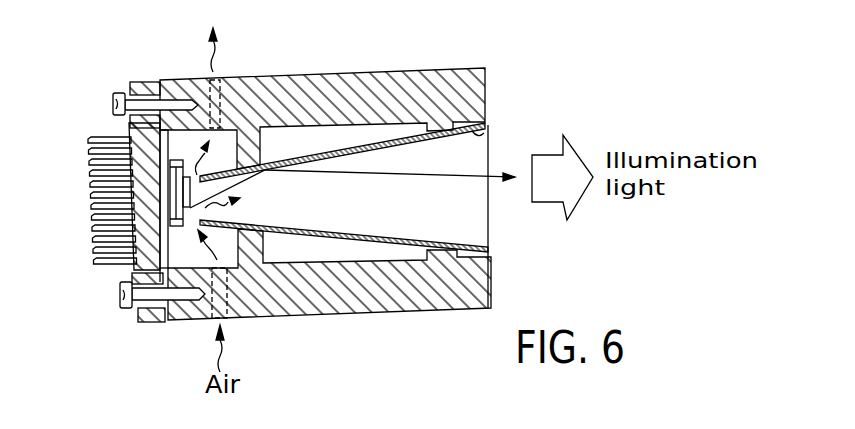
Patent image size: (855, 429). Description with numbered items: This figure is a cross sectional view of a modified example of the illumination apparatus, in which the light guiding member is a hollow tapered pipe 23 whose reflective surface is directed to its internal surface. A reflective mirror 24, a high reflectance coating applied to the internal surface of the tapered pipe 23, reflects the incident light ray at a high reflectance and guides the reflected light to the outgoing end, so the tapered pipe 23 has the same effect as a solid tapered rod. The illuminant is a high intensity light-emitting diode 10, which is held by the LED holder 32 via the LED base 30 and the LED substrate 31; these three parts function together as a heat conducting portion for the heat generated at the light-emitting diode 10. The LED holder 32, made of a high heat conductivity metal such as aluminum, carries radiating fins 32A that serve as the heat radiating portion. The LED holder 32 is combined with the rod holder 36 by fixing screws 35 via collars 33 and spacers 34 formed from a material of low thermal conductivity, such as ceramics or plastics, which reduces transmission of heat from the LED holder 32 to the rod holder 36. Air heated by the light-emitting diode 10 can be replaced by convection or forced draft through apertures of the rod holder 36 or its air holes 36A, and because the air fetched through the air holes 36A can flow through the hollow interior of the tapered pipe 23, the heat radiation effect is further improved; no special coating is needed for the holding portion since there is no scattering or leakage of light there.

The light-emitting diode (LED chip) 10 is at (337, 206).
The tapered pipe 23 is at (378, 160).
The reflective mirror 24 is at (484, 134).
The LED base 30 is at (133, 133).
The LED substrate 31 is at (117, 163).
The LED holder 32 is at (123, 197).
The radiating fins 32A is at (97, 222).
The collars 33 is at (133, 318).
The spacers 34 is at (170, 322).
The fixing screws 35 is at (118, 295).
The rod holder 36 is at (188, 78).
The air holes 36A is at (233, 318).